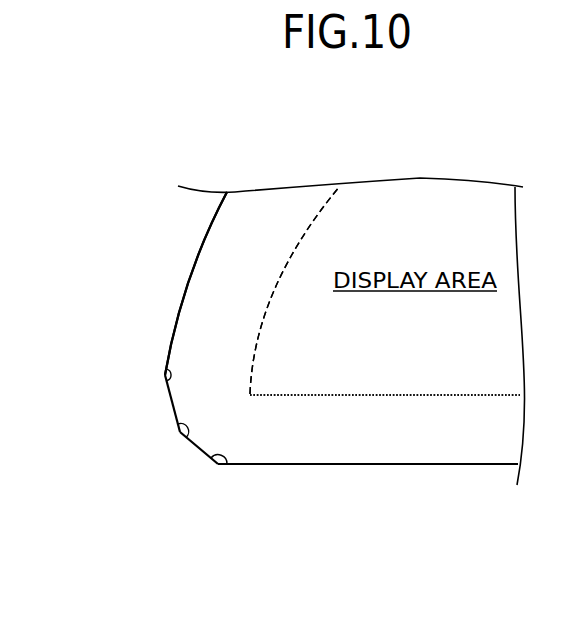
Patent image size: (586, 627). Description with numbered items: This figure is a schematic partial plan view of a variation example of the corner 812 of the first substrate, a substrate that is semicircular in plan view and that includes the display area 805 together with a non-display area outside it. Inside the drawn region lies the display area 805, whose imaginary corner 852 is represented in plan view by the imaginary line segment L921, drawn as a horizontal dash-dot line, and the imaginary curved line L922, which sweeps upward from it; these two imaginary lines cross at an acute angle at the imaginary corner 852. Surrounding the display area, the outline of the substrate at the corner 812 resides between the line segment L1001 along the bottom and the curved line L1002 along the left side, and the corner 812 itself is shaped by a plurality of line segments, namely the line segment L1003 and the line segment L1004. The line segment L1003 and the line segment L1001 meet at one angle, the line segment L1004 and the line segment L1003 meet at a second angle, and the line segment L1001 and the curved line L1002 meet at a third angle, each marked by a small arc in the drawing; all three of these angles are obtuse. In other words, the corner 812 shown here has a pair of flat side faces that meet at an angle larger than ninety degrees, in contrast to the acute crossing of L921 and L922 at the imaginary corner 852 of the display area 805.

The display area 805 is at (451, 198).
The corner 812 is at (193, 334).
The imaginary corner 852 is at (252, 391).
The line segment L1001 is at (433, 465).
The curved line L1002 is at (190, 272).
The line segment L1003 is at (199, 449).
The line segment L1004 is at (172, 405).
The imaginary line segment L921 is at (405, 394).
The imaginary curved line L922 is at (302, 232).